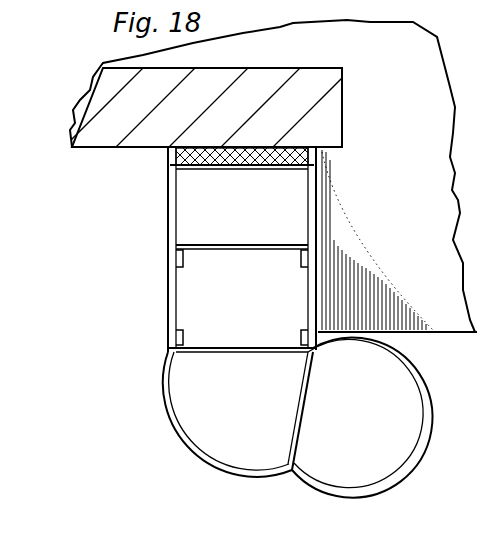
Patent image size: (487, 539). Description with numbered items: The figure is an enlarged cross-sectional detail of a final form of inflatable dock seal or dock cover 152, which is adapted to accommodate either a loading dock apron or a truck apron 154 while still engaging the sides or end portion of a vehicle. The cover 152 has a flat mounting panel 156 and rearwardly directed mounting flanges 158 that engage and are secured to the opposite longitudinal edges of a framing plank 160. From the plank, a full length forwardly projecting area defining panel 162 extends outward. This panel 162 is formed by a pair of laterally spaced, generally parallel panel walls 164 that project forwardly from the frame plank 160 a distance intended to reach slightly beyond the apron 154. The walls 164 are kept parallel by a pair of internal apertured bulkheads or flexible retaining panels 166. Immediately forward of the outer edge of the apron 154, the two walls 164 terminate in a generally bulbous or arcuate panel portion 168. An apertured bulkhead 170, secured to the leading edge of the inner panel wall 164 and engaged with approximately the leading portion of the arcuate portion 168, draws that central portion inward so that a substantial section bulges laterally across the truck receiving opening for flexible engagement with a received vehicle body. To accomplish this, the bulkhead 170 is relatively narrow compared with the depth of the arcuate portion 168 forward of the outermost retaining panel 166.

The dock cover 152 is at (153, 354).
The apron 154 is at (428, 303).
The flat mounting panel 156 is at (217, 173).
The mounting flanges 158 is at (168, 150).
The framing plank 160 is at (217, 146).
The area defining panel 162 is at (180, 457).
The panel walls 164 is at (177, 323).
The flexible retaining panels 166 is at (240, 348).
The arcuate panel portion 168 is at (350, 497).
The apertured bulkhead 170 is at (298, 422).